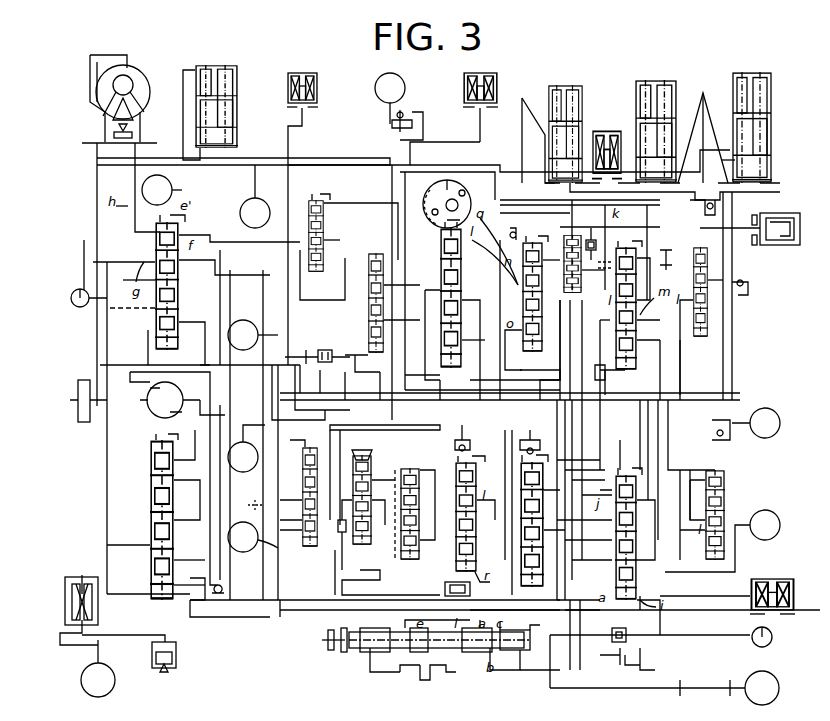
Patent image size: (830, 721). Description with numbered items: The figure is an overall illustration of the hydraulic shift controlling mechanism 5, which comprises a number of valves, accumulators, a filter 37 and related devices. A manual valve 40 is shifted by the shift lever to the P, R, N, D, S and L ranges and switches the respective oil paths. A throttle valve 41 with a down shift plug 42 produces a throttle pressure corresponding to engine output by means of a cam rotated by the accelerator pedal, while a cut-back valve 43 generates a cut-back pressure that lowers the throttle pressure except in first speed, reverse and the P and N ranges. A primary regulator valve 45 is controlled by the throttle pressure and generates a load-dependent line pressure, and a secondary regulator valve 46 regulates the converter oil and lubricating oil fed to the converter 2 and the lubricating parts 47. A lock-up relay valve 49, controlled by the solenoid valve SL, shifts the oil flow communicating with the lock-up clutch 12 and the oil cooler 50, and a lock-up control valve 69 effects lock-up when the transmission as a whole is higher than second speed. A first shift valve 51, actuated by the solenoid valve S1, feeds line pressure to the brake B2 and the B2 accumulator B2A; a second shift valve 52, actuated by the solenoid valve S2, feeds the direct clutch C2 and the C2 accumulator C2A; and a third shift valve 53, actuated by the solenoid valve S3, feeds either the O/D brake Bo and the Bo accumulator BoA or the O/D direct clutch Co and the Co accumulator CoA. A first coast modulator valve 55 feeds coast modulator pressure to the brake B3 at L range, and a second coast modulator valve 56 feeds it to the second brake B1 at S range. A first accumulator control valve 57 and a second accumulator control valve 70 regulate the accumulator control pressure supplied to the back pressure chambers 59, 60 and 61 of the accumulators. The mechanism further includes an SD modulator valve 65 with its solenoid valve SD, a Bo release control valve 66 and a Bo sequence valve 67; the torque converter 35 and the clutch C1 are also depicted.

The hydraulic shift controlling mechanism 5 is at (52, 90).
The converter 2 is at (145, 68).
The lock-up clutch 12 is at (95, 70).
The Co accumulator CoA is at (240, 68).
The solenoid valve SL is at (322, 76).
The second brake B1 is at (399, 106).
The solenoid valve SD is at (502, 78).
The Bo accumulator BoA is at (570, 84).
The solenoid valve S2 is at (606, 128).
The C2 accumulator C2A is at (668, 76).
The B2 accumulator B2A is at (770, 118).
The solenoid valve S3 is at (784, 212).
The back pressure chamber 59 is at (538, 140).
The back pressure chamber 60 is at (703, 138).
The back pressure chamber 61 is at (721, 150).
The O/D direct clutch Co is at (162, 190).
The O/D brake Bo is at (255, 196).
The lock-up relay valve 49 is at (196, 210).
The secondary regulator valve 46 is at (326, 196).
The cut-back valve 43 is at (364, 268).
The throttle valve 41 is at (466, 186).
The down shift plug 42 is at (440, 242).
The lubricating parts 47 is at (243, 320).
The third shift valve 53 is at (525, 240).
The Bo sequence valve 67 is at (582, 250).
The second shift valve 52 is at (640, 235).
The second coast modulator valve 56 is at (712, 265).
The filter 37 is at (76, 406).
The torque converter 35 is at (168, 414).
The primary regulator valve 45 is at (146, 444).
The direct clutch C2 is at (246, 448).
The clutch C1 is at (253, 537).
The lock-up control valve 69 is at (300, 452).
The SD modulator valve 65 is at (352, 456).
The Bo release control valve 66 is at (414, 468).
The first accumulator control valve 57 is at (476, 462).
The second accumulator control valve 70 is at (520, 466).
The first shift valve 51 is at (630, 470).
The first coast modulator valve 55 is at (726, 486).
The brake B2 is at (746, 424).
The first and Rev brake B3 is at (722, 541).
The solenoid valve S1 is at (768, 578).
The oil cooler 50 is at (110, 690).
The manual valve 40 is at (394, 660).